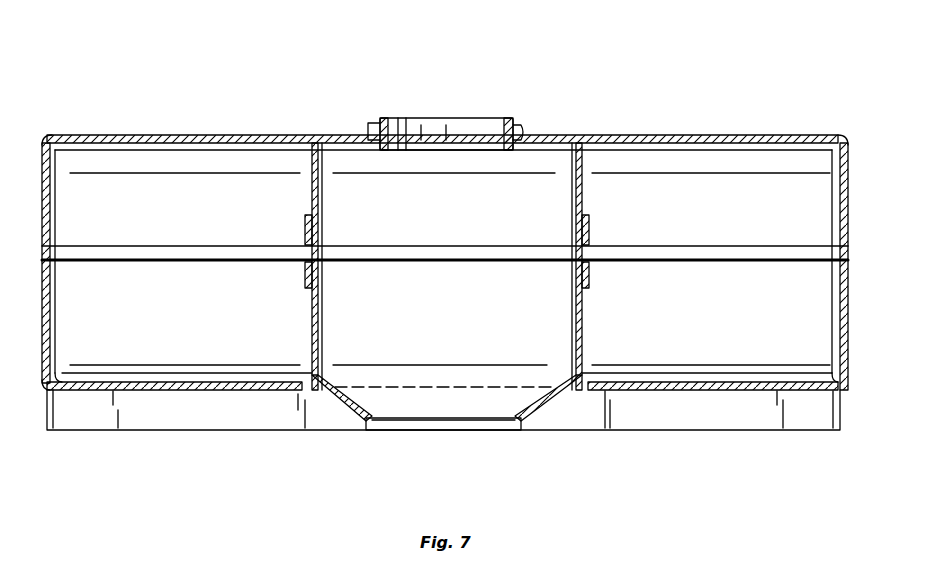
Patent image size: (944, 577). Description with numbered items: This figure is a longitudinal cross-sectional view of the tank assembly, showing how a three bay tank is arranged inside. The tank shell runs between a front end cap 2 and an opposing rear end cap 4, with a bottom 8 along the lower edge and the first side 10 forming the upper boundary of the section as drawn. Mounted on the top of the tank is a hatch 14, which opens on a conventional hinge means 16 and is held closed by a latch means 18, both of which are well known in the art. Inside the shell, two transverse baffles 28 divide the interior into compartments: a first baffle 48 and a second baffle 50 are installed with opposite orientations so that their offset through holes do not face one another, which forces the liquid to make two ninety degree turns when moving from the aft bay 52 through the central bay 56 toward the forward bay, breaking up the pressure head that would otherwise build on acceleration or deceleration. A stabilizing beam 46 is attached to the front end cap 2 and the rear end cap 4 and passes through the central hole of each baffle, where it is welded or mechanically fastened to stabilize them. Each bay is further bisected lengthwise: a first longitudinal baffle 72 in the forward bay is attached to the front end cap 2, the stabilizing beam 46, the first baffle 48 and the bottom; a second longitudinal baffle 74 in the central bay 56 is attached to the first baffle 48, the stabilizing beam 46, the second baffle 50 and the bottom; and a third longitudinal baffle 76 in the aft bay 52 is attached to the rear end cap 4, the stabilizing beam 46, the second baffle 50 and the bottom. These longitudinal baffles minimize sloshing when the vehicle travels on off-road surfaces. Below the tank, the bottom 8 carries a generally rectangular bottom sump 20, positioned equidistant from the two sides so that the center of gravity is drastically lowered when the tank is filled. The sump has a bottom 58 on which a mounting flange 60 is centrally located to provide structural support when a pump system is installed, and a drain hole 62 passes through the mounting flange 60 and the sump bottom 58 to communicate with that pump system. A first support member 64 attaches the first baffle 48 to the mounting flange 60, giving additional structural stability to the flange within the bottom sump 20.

The front end cap 2 is at (441, 223).
The rear end cap 4 is at (451, 419).
The bottom 8 is at (818, 429).
The first side 10 is at (757, 136).
The hatch 14 is at (457, 124).
The hinge means 16 is at (521, 126).
The latch means 18 is at (375, 118).
The bottom sump 20 is at (62, 412).
The baffle 28 is at (464, 223).
The stabilizing beam 46 is at (151, 248).
The first baffle 48 is at (310, 176).
The second baffle 50 is at (587, 167).
The aft bay 52 is at (797, 168).
The central bay 56 is at (357, 192).
The bottom of bottom sump 58 is at (679, 431).
The mounting flange 60 is at (462, 426).
The drain hole 62 is at (420, 430).
The first support member 64 is at (350, 404).
The first longitudinal baffle 72 is at (188, 350).
The second longitudinal baffle 74 is at (416, 350).
The third longitudinal baffle 76 is at (745, 350).